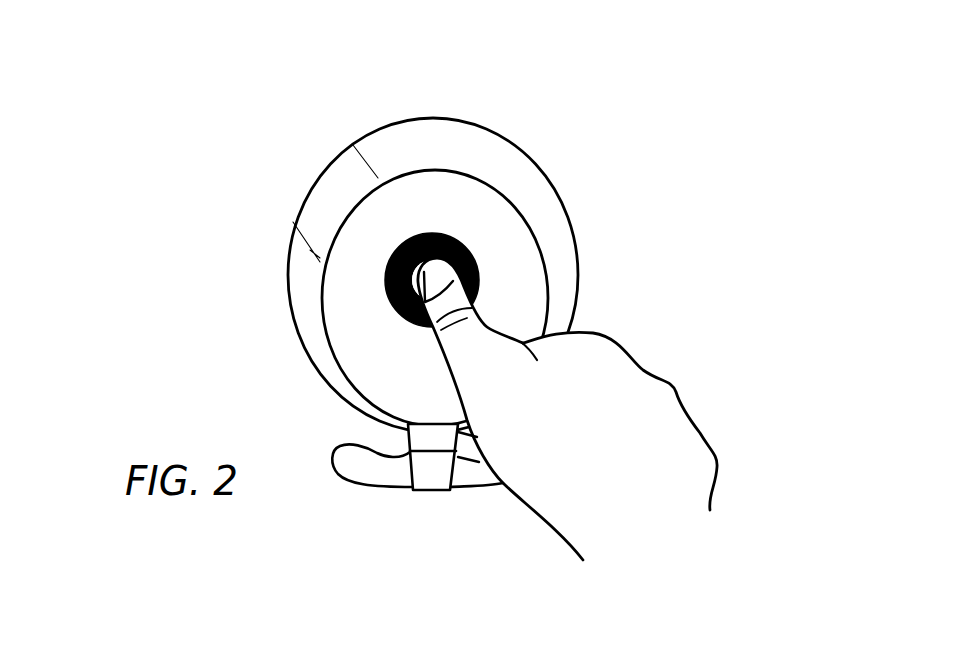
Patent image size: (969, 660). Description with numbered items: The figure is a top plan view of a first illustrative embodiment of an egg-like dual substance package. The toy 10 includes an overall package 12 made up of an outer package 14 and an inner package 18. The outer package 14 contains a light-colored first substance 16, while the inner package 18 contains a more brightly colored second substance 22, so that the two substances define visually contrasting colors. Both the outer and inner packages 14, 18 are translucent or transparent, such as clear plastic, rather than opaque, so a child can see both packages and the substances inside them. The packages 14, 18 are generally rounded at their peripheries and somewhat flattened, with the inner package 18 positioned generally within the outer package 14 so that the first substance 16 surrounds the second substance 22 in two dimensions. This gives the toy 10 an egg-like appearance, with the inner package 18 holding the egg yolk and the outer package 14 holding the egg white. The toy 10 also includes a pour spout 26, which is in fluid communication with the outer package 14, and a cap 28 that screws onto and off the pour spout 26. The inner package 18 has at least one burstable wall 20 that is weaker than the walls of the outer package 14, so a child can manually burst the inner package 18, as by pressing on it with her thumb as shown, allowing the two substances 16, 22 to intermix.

The toy 10 is at (389, 241).
The overall package 12 is at (511, 129).
The outer package 14 is at (338, 226).
The first substance 16 is at (350, 278).
The inner package 18 is at (455, 243).
The burstable wall 20 is at (479, 287).
The second substance 22 is at (470, 257).
The pour spout 26 is at (400, 443).
The cap 28 is at (430, 490).